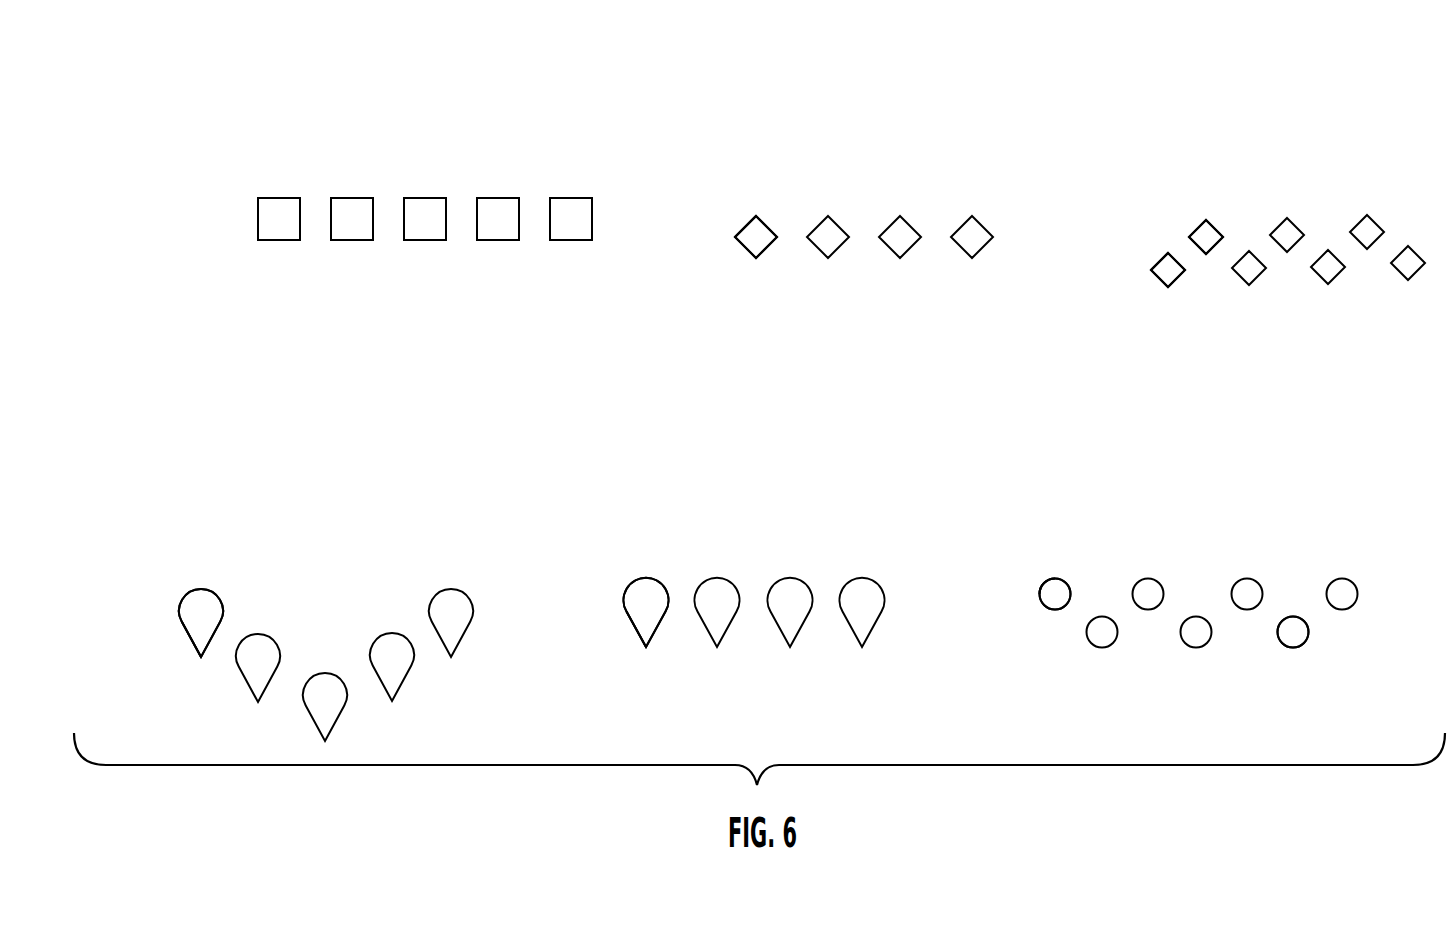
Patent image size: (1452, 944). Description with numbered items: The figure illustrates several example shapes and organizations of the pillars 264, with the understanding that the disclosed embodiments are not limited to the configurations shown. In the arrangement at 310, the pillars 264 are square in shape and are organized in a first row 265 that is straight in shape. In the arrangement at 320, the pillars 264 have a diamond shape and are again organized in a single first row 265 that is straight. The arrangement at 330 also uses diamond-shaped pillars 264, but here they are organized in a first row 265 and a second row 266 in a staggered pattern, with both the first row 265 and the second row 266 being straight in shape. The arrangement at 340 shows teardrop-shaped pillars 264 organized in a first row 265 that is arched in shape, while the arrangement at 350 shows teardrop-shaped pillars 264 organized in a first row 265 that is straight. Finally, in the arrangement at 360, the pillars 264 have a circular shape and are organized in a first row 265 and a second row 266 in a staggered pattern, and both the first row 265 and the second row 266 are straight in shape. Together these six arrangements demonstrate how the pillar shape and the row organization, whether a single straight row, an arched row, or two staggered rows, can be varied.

The square pillar arrangement 310 is at (224, 123).
The diamond pillar arrangement 320 is at (703, 115).
The staggered diamond pillar arrangement 330 is at (1110, 125).
The arched teardrop pillar arrangement 340 is at (223, 499).
The straight teardrop pillar arrangement 350 is at (608, 501).
The staggered circular pillar arrangement 360 is at (1024, 491).
The pillar 264 is at (272, 222).
The first row 265 is at (236, 215).
The second row 266 is at (1136, 263).